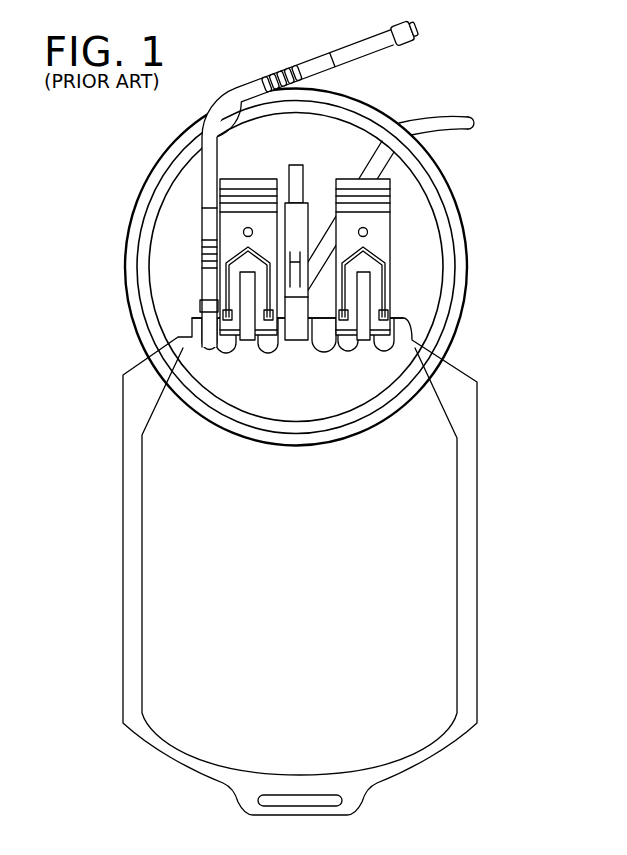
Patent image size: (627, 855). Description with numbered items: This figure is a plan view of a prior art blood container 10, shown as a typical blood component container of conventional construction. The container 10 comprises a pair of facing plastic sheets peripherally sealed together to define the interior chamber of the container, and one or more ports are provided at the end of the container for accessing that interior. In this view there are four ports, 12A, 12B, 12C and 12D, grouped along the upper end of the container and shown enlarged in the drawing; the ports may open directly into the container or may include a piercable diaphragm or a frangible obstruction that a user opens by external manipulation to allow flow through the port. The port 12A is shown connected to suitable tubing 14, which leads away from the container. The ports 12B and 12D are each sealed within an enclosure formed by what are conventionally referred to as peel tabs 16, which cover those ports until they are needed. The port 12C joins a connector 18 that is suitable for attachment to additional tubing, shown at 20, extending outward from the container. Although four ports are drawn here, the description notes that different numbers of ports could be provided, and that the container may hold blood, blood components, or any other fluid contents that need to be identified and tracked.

The blood container 10 is at (496, 503).
The port 12A is at (207, 314).
The port 12B is at (247, 347).
The port 12C is at (297, 353).
The port 12D is at (362, 350).
The tubing 14 is at (203, 181).
The peel tabs 16 is at (250, 184).
The connector 18 is at (306, 220).
The additional tubing 20 is at (445, 118).